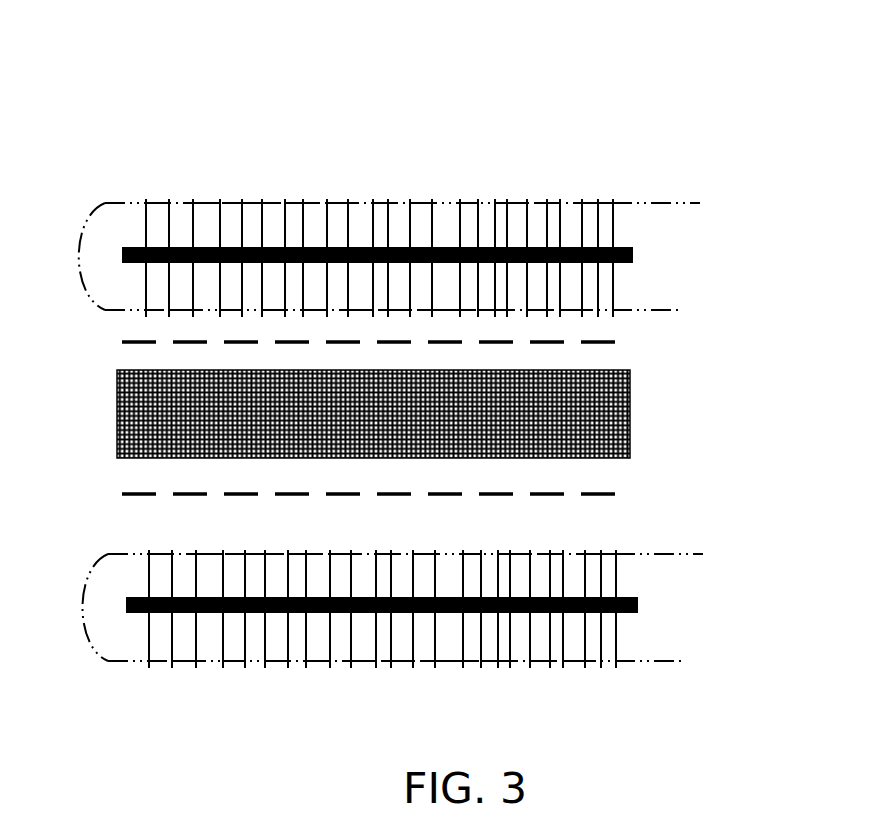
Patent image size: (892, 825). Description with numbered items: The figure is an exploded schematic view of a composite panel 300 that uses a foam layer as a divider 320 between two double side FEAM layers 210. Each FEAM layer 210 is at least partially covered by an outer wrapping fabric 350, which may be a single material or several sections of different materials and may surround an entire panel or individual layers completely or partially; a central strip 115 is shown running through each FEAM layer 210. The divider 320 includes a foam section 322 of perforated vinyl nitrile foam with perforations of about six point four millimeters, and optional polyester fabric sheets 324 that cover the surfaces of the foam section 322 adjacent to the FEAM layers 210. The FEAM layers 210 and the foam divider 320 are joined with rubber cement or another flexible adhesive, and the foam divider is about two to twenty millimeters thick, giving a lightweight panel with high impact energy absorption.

The composite panel 300 is at (405, 122).
The current collector 115 is at (468, 243).
The FEAM layer 210 is at (392, 385).
The outer wrapping fabric 350 is at (80, 295).
The divider 320 is at (635, 530).
The foam section 322 is at (115, 398).
The polyester fabric sheets 324 is at (115, 340).